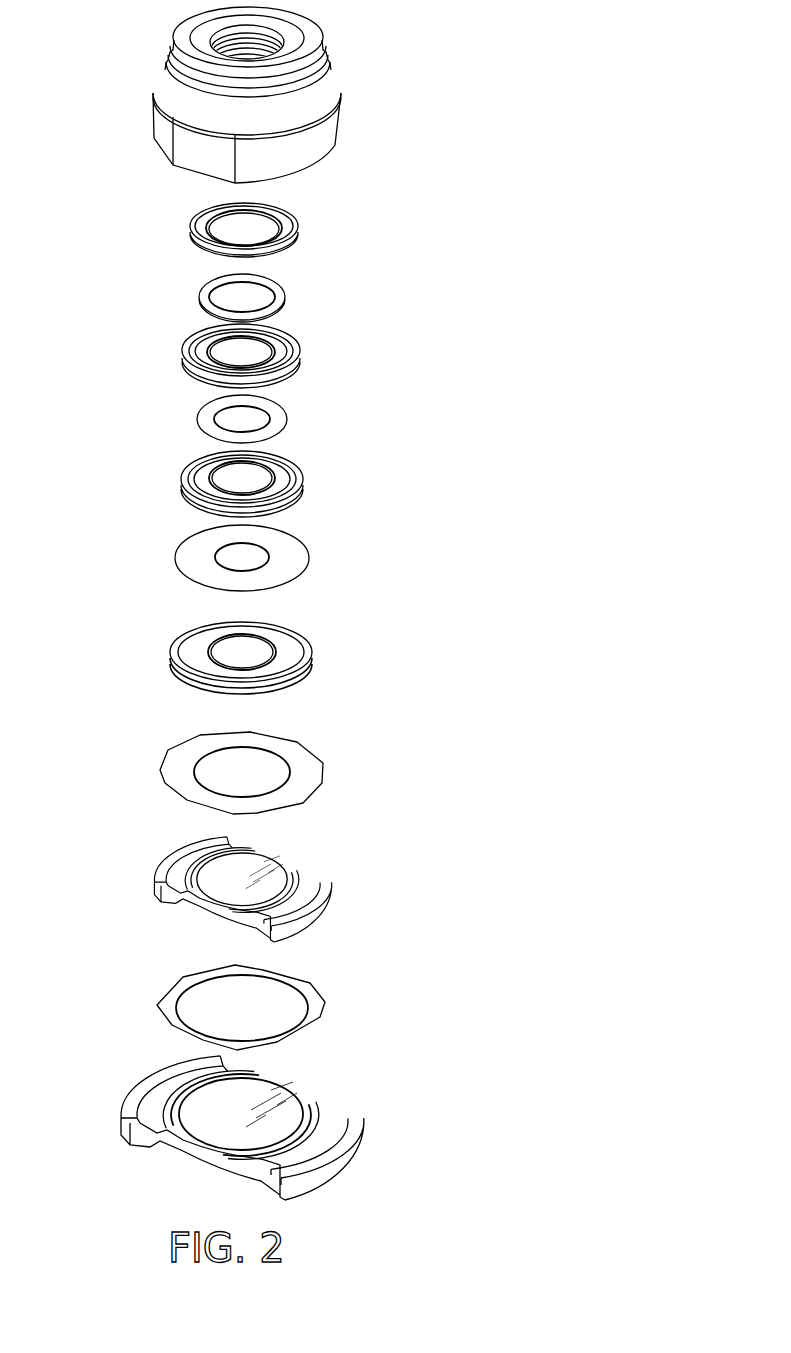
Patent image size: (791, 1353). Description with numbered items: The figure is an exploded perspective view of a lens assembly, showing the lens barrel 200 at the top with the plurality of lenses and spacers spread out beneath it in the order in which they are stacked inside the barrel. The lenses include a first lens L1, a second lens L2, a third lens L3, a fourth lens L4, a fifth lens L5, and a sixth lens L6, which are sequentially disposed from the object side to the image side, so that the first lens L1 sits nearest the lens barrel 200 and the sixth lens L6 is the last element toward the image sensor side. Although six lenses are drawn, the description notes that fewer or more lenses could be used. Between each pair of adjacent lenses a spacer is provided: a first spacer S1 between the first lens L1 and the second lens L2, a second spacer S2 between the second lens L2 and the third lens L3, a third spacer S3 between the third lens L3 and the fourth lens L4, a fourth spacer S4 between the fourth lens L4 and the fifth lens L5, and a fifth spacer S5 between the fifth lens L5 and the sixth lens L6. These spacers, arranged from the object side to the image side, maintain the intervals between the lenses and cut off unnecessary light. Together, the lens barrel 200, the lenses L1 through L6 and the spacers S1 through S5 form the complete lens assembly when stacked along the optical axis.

The lens barrel 200 is at (310, 47).
The first lens L1 is at (213, 227).
The first spacer S1 is at (206, 295).
The second lens L2 is at (204, 350).
The second spacer S2 is at (208, 414).
The third lens L3 is at (205, 472).
The third spacer S3 is at (208, 553).
The fourth lens L4 is at (190, 650).
The fourth spacer S4 is at (180, 755).
The fifth lens L5 is at (172, 862).
The fifth spacer S5 is at (167, 1000).
The sixth lens L6 is at (140, 1100).